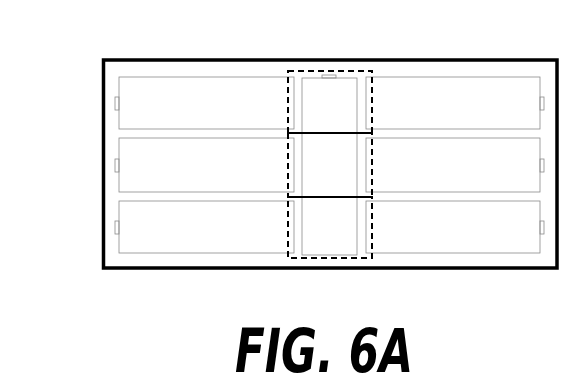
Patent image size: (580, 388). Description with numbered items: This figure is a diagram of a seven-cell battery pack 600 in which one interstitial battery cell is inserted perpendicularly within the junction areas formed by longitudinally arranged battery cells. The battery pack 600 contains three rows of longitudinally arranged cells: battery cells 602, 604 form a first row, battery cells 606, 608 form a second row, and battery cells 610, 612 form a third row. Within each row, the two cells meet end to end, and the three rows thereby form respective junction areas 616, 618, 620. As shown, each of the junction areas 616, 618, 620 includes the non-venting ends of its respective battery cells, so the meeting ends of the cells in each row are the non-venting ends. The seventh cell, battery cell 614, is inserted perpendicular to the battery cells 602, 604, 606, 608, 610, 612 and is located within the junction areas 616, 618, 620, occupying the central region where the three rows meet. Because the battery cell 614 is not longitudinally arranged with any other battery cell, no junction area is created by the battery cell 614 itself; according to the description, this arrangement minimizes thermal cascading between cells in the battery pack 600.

The battery pack 600 is at (285, 164).
The battery cell 602 is at (204, 103).
The battery cell 604 is at (455, 103).
The battery cell 606 is at (204, 165).
The battery cell 608 is at (455, 165).
The battery cell 610 is at (204, 227).
The battery cell 612 is at (455, 227).
The battery cell 614 is at (329, 165).
The junction area 616 is at (296, 76).
The junction area 618 is at (381, 110).
The junction area 620 is at (308, 250).